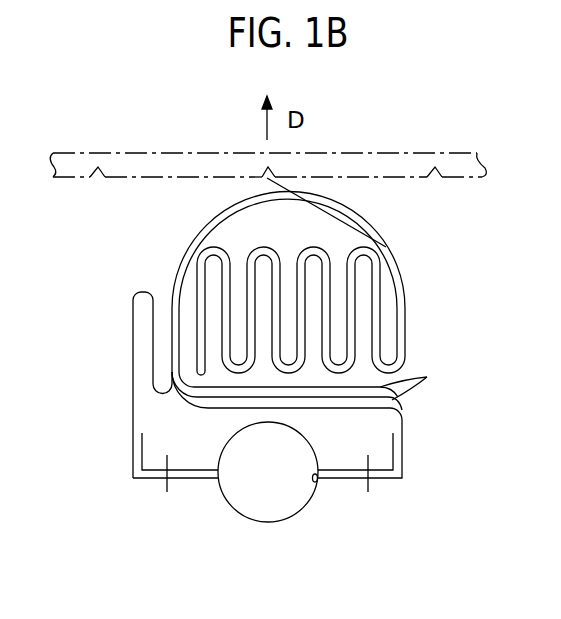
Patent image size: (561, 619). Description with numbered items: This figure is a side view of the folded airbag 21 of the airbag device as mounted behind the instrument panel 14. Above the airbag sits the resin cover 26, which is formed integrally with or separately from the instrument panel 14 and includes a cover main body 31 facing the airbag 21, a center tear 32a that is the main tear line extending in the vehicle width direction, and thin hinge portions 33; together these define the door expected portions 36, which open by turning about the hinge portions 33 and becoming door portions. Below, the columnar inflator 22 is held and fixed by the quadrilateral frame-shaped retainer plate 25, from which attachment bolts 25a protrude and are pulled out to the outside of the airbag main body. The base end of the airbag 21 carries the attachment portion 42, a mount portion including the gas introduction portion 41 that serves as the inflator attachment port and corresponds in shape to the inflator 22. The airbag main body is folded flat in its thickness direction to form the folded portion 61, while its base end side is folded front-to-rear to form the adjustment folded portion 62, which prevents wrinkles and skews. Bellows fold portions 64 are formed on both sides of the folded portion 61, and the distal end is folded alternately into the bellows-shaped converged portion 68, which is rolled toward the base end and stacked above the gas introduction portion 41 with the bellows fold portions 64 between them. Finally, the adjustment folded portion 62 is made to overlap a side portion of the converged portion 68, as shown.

The instrument panel 14 is at (266, 159).
The door expected portion 36 is at (143, 153).
The cover 26 is at (217, 153).
The cover main body 31 is at (380, 153).
The hinge portion 33 is at (100, 178).
The airbag 21 is at (315, 294).
The folded portion 61 is at (402, 340).
The converged portion 68 is at (183, 246).
The center tear 32a is at (393, 244).
The adjustment folded portion 62 is at (133, 339).
The bellows fold portion 64 is at (424, 378).
The retainer plate 25 is at (275, 473).
The attachment bolt 25a is at (165, 483).
The attachment portion 42 is at (196, 480).
The inflator 22 is at (268, 523).
The gas introduction portion 41 is at (314, 497).